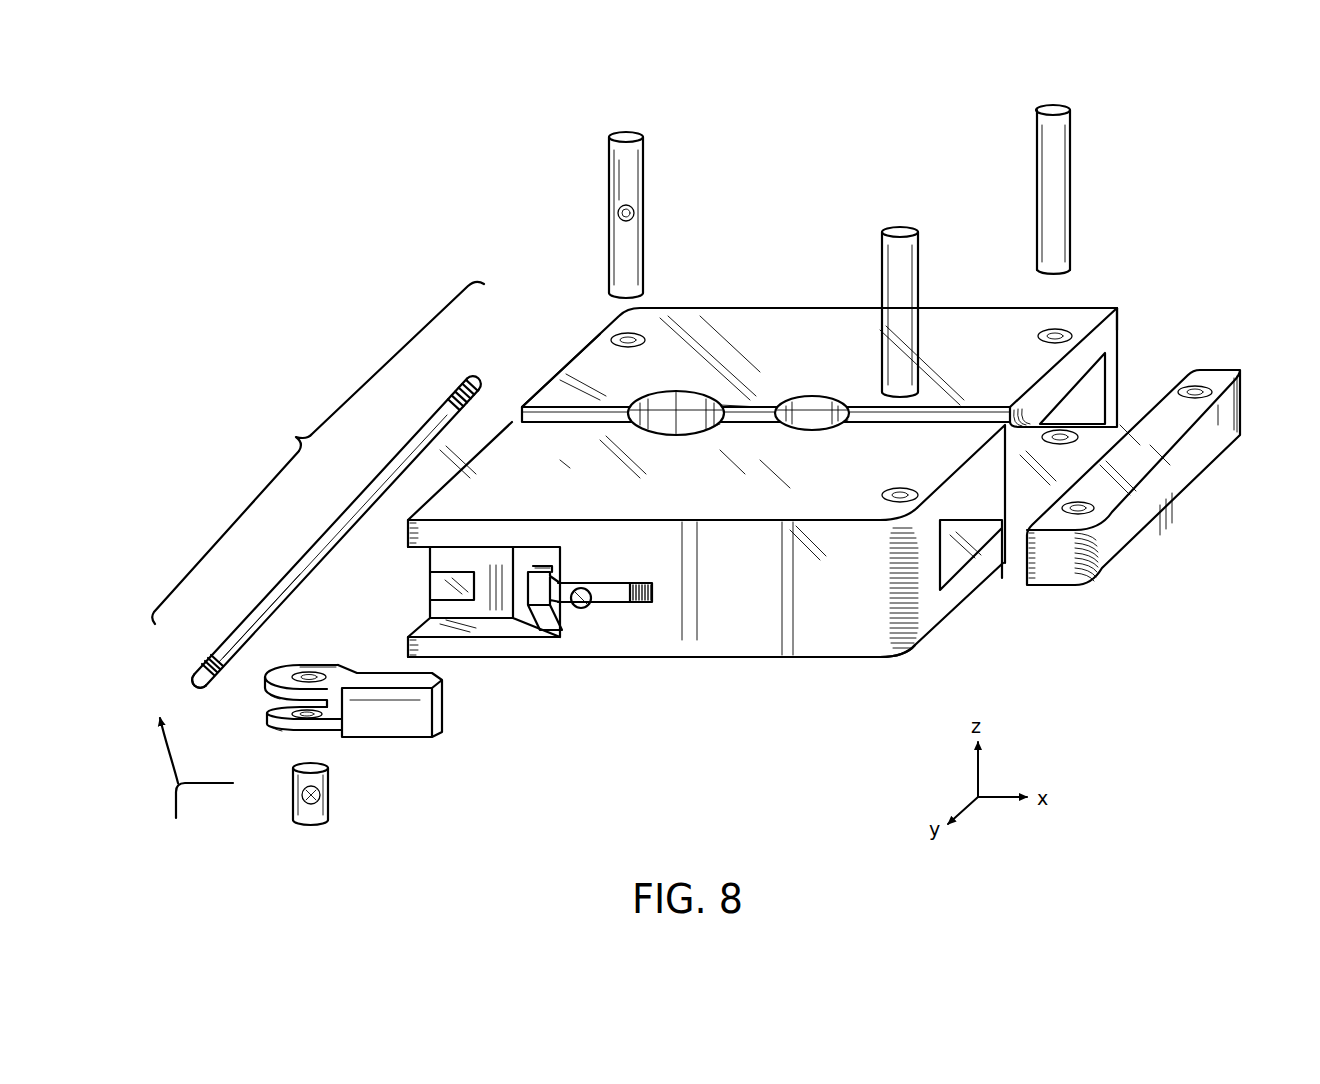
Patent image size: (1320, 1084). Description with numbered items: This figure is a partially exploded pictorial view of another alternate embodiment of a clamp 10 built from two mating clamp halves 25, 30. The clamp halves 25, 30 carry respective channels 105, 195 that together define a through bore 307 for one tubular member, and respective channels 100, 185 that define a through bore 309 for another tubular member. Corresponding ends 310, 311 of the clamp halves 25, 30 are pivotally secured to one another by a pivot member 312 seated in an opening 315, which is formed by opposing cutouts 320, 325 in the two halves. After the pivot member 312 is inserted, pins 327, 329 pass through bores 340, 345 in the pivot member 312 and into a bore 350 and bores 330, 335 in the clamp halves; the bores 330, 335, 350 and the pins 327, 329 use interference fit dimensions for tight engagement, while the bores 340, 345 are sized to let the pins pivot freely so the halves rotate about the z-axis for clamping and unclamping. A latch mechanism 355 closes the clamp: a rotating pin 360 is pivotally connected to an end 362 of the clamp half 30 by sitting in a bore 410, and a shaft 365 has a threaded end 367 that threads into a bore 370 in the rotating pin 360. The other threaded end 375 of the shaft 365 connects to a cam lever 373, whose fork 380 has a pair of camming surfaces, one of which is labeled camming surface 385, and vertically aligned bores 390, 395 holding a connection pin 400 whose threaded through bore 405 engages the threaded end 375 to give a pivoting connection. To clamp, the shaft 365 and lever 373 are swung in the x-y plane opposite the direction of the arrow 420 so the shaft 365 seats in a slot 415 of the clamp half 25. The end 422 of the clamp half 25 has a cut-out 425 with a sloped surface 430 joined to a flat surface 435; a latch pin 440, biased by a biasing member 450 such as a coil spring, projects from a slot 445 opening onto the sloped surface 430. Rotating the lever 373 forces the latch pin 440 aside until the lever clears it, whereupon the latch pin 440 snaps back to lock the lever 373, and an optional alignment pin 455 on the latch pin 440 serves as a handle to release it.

The clamp 10 is at (476, 235).
The clamp half 25 is at (680, 708).
The clamp half 30 is at (757, 303).
The channel 100 is at (836, 426).
The channel 105 is at (696, 432).
The channel 185 is at (818, 396).
The channel 195 is at (682, 392).
The through bore 307 is at (668, 418).
The through bore 309 is at (806, 410).
The end of clamp half 310 is at (896, 668).
The end of clamp half 311 is at (1097, 306).
The pivot member 312 is at (1133, 477).
The opening 315 is at (998, 482).
The cutout 320 is at (946, 558).
The cutout 325 is at (1092, 393).
The pin 327 is at (908, 254).
The pin 329 is at (1050, 130).
The bore 330 is at (892, 500).
The bore 335 is at (1046, 332).
The bore 340 is at (1075, 514).
The bore 345 is at (1193, 388).
The bore 350 is at (1078, 434).
The latch mechanism 355 is at (318, 453).
The rotating pin 360 is at (633, 172).
The end of clamp half 362 is at (583, 323).
The shaft 365 is at (355, 515).
The threaded end 367 is at (469, 378).
The bore 370 is at (634, 214).
The cam lever 373 is at (365, 740).
The threaded end 375 is at (207, 662).
The fork 380 is at (260, 711).
The camming surface 385 is at (296, 664).
The bore 390 is at (325, 676).
The bore 395 is at (298, 717).
The connection pin 400 is at (322, 822).
The threaded through bore 405 is at (308, 803).
The bore 410 is at (612, 341).
The slot 415 is at (458, 578).
The arrow 420 is at (191, 782).
The end of clamp half 422 is at (415, 565).
The cut-out 425 is at (486, 624).
The sloped surface 430 is at (555, 615).
The flat surface 435 is at (484, 591).
The latch pin 440 is at (538, 602).
The slot 445 is at (545, 570).
The biasing member 450 is at (638, 583).
The alignment pin 455 is at (583, 590).